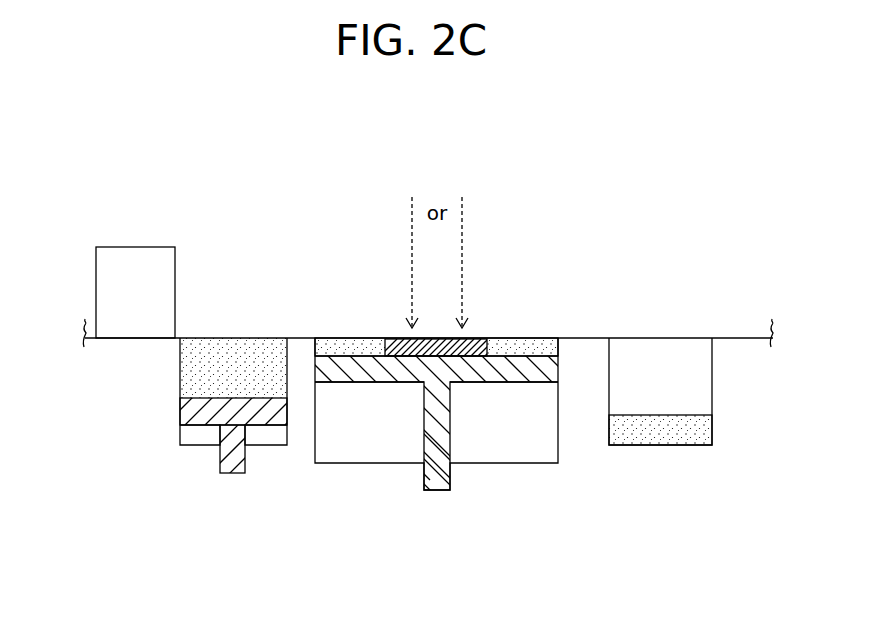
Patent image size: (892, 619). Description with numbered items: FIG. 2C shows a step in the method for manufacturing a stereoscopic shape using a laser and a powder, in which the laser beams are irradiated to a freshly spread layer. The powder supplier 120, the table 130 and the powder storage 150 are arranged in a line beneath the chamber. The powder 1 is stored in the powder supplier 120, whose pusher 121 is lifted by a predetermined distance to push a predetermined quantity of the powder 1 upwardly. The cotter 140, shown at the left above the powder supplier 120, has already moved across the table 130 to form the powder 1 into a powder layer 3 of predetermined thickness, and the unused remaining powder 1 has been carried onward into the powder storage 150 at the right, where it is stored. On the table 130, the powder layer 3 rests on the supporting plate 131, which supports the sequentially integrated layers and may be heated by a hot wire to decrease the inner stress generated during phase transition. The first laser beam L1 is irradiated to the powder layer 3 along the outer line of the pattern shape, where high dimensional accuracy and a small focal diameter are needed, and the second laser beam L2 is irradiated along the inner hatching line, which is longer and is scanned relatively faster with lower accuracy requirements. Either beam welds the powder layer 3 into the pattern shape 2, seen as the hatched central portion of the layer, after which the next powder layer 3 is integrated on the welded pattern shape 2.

The cotter 140 is at (147, 247).
The powder supplier 120 is at (178, 438).
The pusher 121 is at (263, 420).
The table 130 is at (503, 463).
The supporting plate 131 is at (360, 385).
The powder storage 150 is at (712, 367).
The powder 1 is at (200, 372).
The pattern shape 2 is at (480, 340).
The powder layer 3 is at (342, 347).
The first laser beam L1 is at (410, 212).
The second laser beam L2 is at (463, 212).